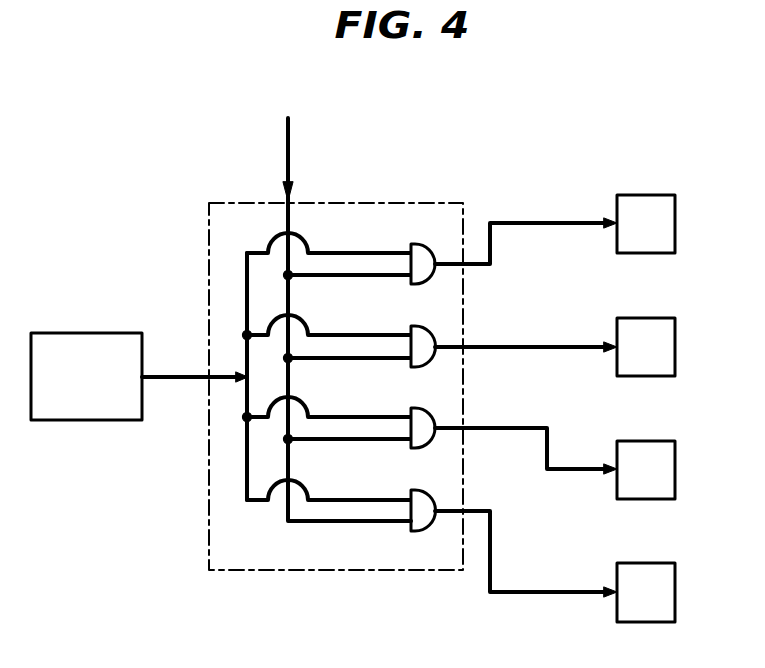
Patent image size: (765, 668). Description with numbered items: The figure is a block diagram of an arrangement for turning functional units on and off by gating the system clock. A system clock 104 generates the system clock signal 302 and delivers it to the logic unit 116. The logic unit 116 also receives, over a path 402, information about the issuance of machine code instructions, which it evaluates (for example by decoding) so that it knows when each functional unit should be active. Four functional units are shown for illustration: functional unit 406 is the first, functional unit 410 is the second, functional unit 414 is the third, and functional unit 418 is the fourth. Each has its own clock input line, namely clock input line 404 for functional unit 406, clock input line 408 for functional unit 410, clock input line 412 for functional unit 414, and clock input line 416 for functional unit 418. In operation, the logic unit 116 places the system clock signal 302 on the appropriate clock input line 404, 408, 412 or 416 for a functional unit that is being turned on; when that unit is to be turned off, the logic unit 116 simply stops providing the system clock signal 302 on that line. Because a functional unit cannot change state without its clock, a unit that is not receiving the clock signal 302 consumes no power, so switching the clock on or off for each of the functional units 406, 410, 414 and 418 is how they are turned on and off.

The system clock 104 is at (70, 333).
The system clock signal 302 is at (192, 373).
The logic unit 116 is at (210, 505).
The path 402 is at (288, 148).
The clock input line 404 is at (537, 222).
The functional unit 1 406 is at (648, 195).
The clock input line 408 is at (537, 345).
The functional unit 2 410 is at (648, 318).
The clock input line 412 is at (512, 425).
The functional unit 3 414 is at (648, 441).
The clock input line 416 is at (537, 590).
The functional unit 4 418 is at (648, 563).